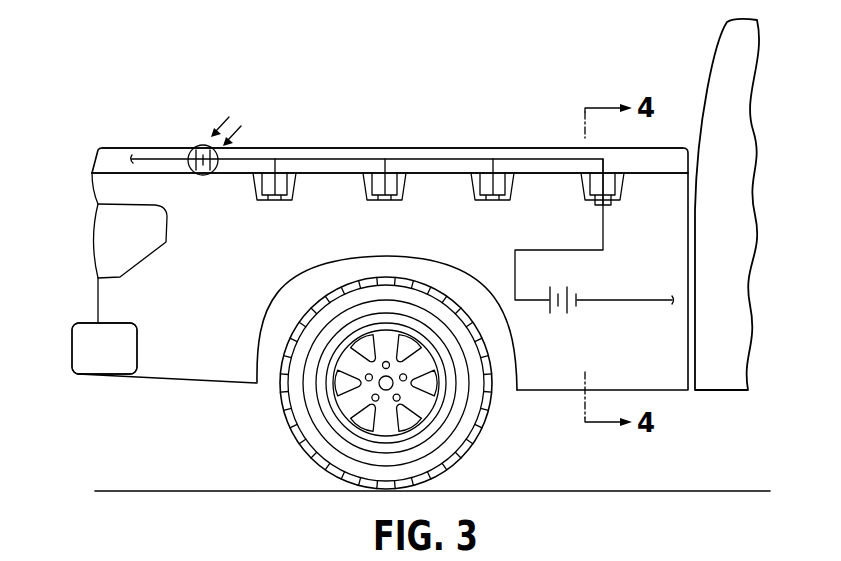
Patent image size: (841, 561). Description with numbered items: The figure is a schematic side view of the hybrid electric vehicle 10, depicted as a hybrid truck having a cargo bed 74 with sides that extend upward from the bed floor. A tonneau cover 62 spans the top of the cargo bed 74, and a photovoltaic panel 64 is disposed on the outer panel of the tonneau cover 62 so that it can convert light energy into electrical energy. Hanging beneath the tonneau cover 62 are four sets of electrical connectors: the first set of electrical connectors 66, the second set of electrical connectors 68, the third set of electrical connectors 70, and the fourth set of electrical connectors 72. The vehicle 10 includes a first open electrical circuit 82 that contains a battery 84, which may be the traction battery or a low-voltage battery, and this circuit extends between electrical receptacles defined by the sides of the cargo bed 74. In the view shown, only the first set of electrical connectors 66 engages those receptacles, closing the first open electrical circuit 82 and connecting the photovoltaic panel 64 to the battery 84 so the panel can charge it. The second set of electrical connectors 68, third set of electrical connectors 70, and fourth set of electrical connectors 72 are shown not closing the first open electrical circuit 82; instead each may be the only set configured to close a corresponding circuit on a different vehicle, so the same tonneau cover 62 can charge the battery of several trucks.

The hybrid electric vehicle 10 is at (336, 62).
The tonneau cover 62 is at (138, 133).
The photovoltaic panel 64 is at (191, 149).
The first set of electrical connectors 66 is at (578, 183).
The second set of electrical connectors 68 is at (478, 182).
The third set of electrical connectors 70 is at (403, 182).
The fourth set of electrical connectors 72 is at (291, 183).
The cargo bed 74 is at (85, 304).
The first open electrical circuit 82 is at (615, 288).
The battery 84 is at (575, 334).